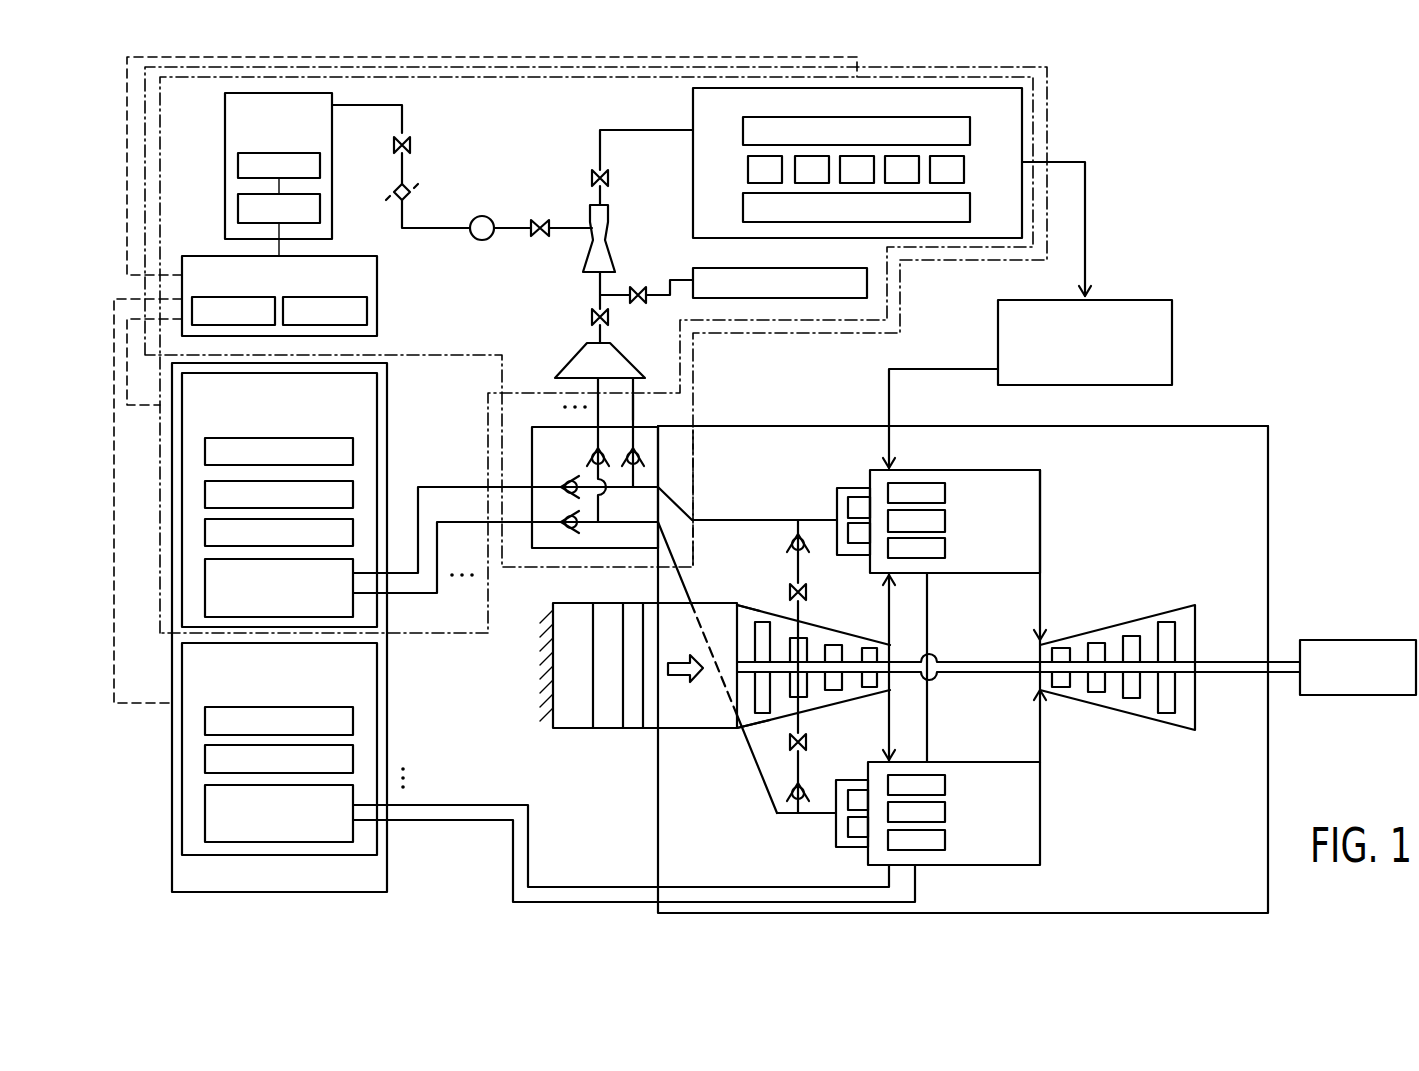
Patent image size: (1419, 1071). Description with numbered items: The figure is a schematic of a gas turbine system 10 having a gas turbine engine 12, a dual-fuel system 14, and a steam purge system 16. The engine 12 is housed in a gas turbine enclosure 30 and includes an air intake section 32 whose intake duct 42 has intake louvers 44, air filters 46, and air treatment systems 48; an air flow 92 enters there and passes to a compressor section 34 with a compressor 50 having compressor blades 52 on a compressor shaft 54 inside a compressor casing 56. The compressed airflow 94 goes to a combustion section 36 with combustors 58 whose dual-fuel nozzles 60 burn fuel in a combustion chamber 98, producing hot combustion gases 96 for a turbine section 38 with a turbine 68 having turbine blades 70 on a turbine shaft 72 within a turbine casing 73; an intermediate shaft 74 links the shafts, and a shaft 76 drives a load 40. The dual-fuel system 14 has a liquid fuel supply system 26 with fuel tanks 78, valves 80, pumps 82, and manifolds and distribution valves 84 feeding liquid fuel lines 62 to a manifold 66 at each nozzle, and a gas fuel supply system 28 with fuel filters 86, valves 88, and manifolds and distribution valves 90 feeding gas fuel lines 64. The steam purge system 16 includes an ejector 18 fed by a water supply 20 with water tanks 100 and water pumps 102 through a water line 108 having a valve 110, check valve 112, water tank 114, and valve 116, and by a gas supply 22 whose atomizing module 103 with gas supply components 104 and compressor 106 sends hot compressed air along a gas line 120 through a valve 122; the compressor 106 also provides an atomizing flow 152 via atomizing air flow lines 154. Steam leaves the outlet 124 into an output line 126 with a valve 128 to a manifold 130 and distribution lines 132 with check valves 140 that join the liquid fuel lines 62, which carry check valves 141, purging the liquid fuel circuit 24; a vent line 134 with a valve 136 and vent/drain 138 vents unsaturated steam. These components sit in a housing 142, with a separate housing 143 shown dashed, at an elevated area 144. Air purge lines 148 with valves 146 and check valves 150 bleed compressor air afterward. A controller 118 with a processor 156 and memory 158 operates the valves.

The gas turbine system 10 is at (1298, 375).
The gas turbine engine 12 is at (1163, 480).
The dual-fuel system 14 is at (382, 887).
The steam purge system 16 is at (526, 137).
The ejector 18 is at (592, 248).
The water supply 20 is at (225, 130).
The gas supply 22 is at (1022, 93).
The liquid fuel circuit 24 is at (705, 502).
The liquid fuel supply system 26 is at (387, 390).
The gas fuel supply system 28 is at (377, 678).
The gas turbine enclosure 30 is at (1174, 898).
The air intake section 32 is at (568, 730).
The compressor section 34 is at (740, 602).
The combustion section 36 is at (948, 458).
The turbine section 38 is at (1143, 717).
The load 40 is at (1363, 695).
The intake duct 42 is at (632, 730).
The intake louvers 44 is at (552, 612).
The air filters 46 is at (607, 717).
The air treatment systems 48 is at (652, 603).
The compressor 50 is at (768, 722).
The compressor blades 52 is at (830, 695).
The compressor shaft 54 is at (887, 652).
The compressor casing 56 is at (853, 635).
The combustor 58 is at (1040, 507).
The fuel nozzles 60 is at (945, 545).
The liquid fuel lines 62 is at (410, 593).
The gas fuel lines 64 is at (398, 822).
The manifold 66 is at (855, 488).
The turbine 68 is at (1172, 592).
The turbine blades 70 is at (1097, 643).
The turbine shaft 72 is at (1180, 673).
The turbine casing 73 is at (1133, 637).
The intermediate shaft 74 is at (967, 673).
The shaft 76 is at (1283, 660).
The fuel tanks 78 is at (205, 452).
The valves 80 is at (205, 494).
The pumps 82 is at (205, 532).
The manifolds and distribution valves 84 is at (205, 588).
The fuel filters 86 is at (205, 721).
The valves 88 is at (205, 759).
The manifolds and distribution valves 90 is at (205, 813).
The air flow 92 is at (680, 677).
The compressed airflow 94 is at (893, 723).
The hot combustion gases 96 is at (1040, 595).
The combustion chamber 98 is at (1024, 561).
The water tanks 100 is at (238, 165).
The water pumps 102 is at (238, 205).
The atomizing module 103 is at (970, 132).
The gas supply components 104 is at (973, 167).
The compressor 106 is at (932, 222).
The water line 108 is at (432, 230).
The valve 110 is at (397, 140).
The check valve 112 is at (393, 195).
The water tank 114 is at (478, 217).
The valve 116 is at (542, 218).
The controller 118 is at (340, 256).
The gas line 120 is at (645, 132).
The valve 122 is at (592, 173).
The outlet 124 is at (617, 277).
The output line 126 is at (597, 340).
The valve 128 is at (595, 312).
The manifold 130 is at (642, 363).
The distribution lines 132 is at (634, 407).
The vent line 134 is at (670, 280).
The valve 136 is at (640, 303).
The vent/drain 138 is at (768, 268).
The check valve 140 is at (593, 452).
The check valve 141 is at (567, 527).
The housing 142 is at (532, 467).
The housing 143 is at (160, 621).
The elevated area 144 is at (668, 462).
The valves 146 is at (830, 592).
The air purge lines 148 is at (803, 520).
The check valves 150 is at (788, 543).
The atomizing flow 152 is at (1173, 342).
The atomizing air flow lines 154 is at (1085, 207).
The processor 156 is at (203, 297).
The memory 158 is at (367, 313).